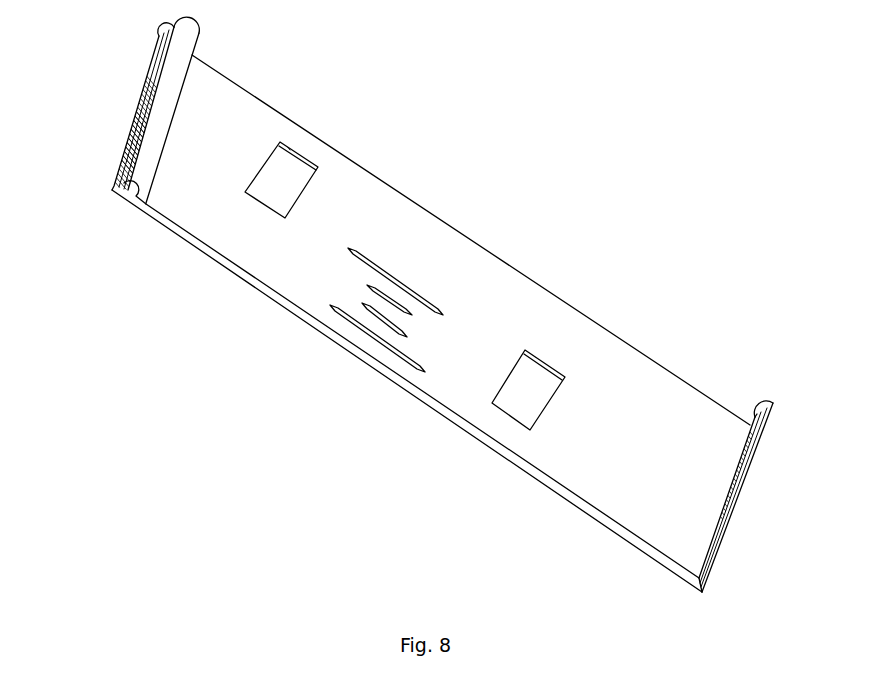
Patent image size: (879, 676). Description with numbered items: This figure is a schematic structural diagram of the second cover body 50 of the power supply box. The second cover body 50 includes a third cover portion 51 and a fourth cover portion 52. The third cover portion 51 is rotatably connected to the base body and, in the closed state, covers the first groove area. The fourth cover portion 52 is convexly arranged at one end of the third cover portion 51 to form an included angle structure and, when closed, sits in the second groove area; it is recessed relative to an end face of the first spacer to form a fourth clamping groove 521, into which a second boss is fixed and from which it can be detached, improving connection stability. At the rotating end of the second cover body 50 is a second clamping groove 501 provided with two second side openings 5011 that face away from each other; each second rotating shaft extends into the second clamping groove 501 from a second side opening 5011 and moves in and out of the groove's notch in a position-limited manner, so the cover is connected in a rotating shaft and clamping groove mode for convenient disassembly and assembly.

The second cover body 50 is at (519, 45).
The second clamping groove 501 is at (143, 113).
The second side opening 5011 is at (127, 188).
The third cover portion 51 is at (430, 211).
The fourth cover portion 52 is at (735, 533).
The fourth clamping groove 521 is at (755, 421).